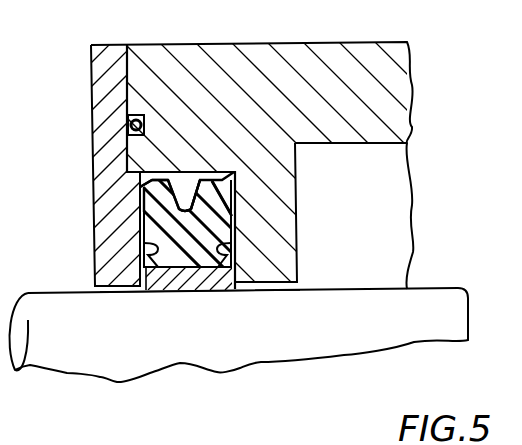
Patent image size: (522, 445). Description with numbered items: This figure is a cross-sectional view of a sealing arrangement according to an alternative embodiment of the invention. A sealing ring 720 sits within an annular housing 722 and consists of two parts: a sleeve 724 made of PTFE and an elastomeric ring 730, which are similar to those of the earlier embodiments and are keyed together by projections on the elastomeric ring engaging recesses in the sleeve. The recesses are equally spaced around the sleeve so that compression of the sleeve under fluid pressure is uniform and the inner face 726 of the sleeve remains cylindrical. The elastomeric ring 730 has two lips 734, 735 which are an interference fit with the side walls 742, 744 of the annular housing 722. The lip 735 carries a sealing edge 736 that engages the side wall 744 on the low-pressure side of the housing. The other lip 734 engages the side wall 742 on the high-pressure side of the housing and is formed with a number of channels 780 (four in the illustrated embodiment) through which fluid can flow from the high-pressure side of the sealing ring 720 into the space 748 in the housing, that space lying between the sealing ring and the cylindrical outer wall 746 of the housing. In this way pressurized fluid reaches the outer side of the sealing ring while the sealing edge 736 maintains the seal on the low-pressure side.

The sealing ring 720 is at (206, 284).
The annular housing 722 is at (286, 265).
The sleeve 724 is at (176, 285).
The inner face 726 is at (194, 292).
The elastomeric ring 730 is at (140, 229).
The lip 734 is at (204, 190).
The lip 735 is at (154, 190).
The sealing edge 736 is at (143, 198).
The side wall 742 is at (225, 258).
The side wall 744 is at (143, 250).
The cylindrical outer wall 746 is at (140, 178).
The space 748 is at (187, 202).
The channels 780 is at (219, 202).